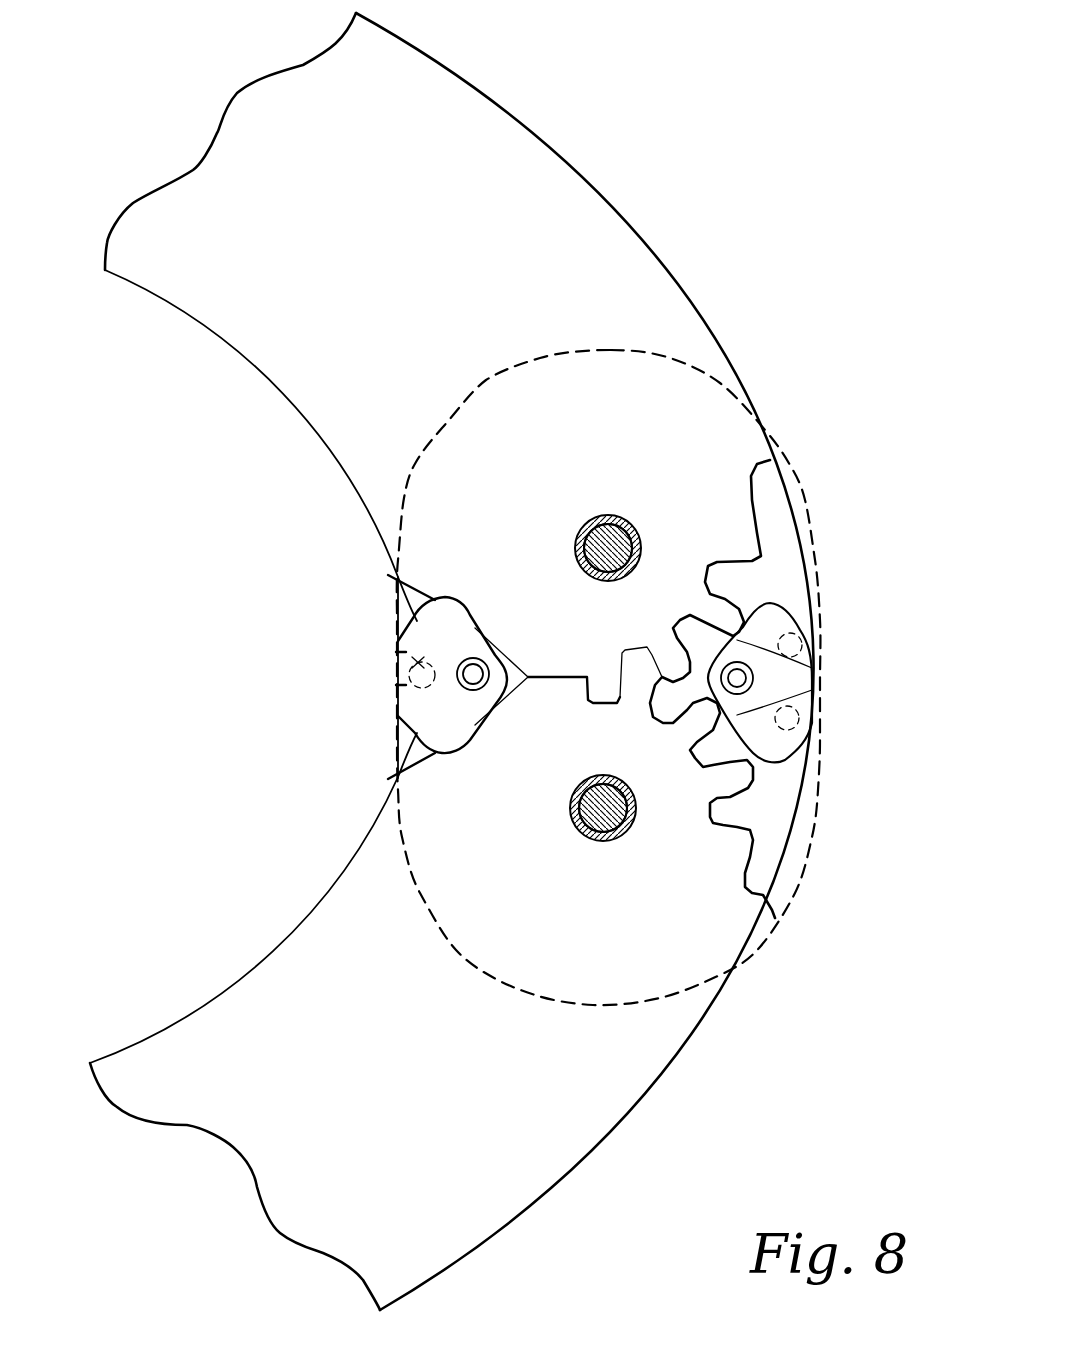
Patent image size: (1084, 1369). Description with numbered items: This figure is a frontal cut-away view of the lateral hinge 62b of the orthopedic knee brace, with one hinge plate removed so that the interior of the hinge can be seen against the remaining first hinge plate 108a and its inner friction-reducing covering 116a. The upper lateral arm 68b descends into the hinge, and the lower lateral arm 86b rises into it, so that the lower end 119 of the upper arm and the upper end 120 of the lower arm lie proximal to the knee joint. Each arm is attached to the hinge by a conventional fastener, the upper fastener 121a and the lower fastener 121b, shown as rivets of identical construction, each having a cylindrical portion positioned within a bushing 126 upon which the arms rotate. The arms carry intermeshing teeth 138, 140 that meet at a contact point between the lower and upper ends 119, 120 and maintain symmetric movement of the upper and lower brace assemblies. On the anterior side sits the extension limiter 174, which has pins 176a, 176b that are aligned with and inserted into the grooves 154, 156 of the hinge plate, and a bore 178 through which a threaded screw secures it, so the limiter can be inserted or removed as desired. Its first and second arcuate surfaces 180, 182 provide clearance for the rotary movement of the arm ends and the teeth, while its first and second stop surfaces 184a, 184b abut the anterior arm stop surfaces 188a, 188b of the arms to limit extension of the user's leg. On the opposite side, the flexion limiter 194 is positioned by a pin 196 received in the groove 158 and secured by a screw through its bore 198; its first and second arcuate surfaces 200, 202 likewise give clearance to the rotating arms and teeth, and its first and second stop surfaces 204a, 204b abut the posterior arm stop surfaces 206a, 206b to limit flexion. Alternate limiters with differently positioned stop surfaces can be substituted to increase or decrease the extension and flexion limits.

The upper lateral arm 68b is at (580, 204).
The lateral hinge 62b is at (772, 320).
The lower lateral arm 86b is at (625, 1048).
The first hinge plate 108a is at (775, 450).
The anterior arm stop surface 188a is at (790, 478).
The anterior arm stop surface 188b is at (785, 885).
The inner friction-reducing covering 116a is at (790, 520).
The intermeshing teeth 138 is at (727, 595).
The intermeshing teeth 140 is at (770, 780).
The first stop surface 184a is at (760, 613).
The second stop surface 184b is at (775, 760).
The pin 176a is at (798, 640).
The pin 176b is at (795, 730).
The groove 154 is at (802, 655).
The groove 156 is at (802, 742).
The first arcuate surface 180 is at (746, 678).
The extension limiter 174 is at (812, 690).
The bore 178 is at (805, 710).
The second arcuate surface 182 is at (800, 725).
The upper fastener 121a is at (608, 525).
The lower fastener 121b is at (590, 830).
The bushing 126 is at (635, 522).
The lower end 119 is at (630, 628).
The upper end 120 is at (630, 762).
The second arcuate surface 202 is at (485, 718).
The first arcuate surface 200 is at (480, 630).
The pin 196 is at (466, 670).
The bore 198 is at (412, 658).
The groove 158 is at (400, 680).
The flexion limiter 194 is at (412, 705).
The first stop surface 204a is at (388, 575).
The second stop surface 204b is at (388, 779).
The posterior arm stop surface 206a is at (464, 604).
The posterior arm stop surface 206b is at (462, 750).